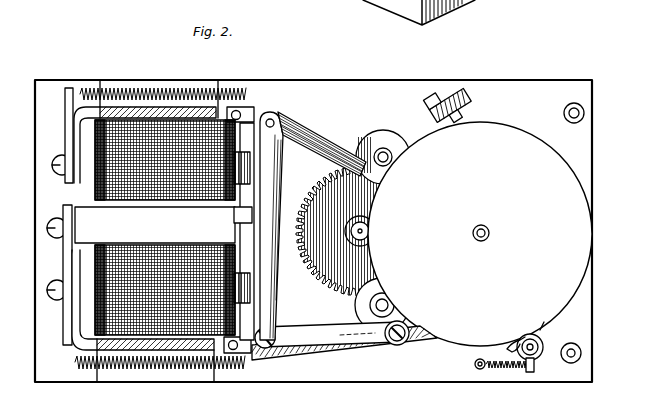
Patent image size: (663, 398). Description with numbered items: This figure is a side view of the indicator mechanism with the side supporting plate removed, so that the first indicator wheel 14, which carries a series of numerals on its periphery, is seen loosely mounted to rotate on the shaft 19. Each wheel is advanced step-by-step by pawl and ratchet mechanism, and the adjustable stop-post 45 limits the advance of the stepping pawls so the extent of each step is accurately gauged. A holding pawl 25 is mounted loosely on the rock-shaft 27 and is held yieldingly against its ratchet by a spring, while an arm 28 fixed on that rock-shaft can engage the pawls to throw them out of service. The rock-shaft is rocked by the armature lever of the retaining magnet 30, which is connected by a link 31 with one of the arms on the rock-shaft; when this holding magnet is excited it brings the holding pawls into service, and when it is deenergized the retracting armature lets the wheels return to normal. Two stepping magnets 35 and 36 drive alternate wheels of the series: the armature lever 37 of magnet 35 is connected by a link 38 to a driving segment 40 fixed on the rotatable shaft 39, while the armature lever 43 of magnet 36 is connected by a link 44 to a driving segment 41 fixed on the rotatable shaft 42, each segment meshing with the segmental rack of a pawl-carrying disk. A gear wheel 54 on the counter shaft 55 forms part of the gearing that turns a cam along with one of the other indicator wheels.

The indicator wheel 14 is at (480, 234).
The shaft 19 is at (480, 226).
The holding pawl 25 is at (504, 354).
The rock-shaft 27 is at (540, 343).
The arm 28 is at (543, 333).
The retaining magnet 30 is at (90, 200).
The link 31 is at (278, 352).
The stepping magnet 35 is at (165, 160).
The stepping magnet 36 is at (165, 290).
The armature lever 37 is at (268, 238).
The link 38 is at (303, 328).
The rotatable shaft 39 is at (376, 306).
The driving segment 40 is at (406, 338).
The driving segment 41 is at (403, 147).
The rotatable shaft 42 is at (383, 150).
The armature lever 43 is at (312, 188).
The link 44 is at (320, 142).
The adjustable stop-post 45 is at (458, 113).
The gear wheel 54 is at (318, 220).
The counter shaft 55 is at (355, 231).